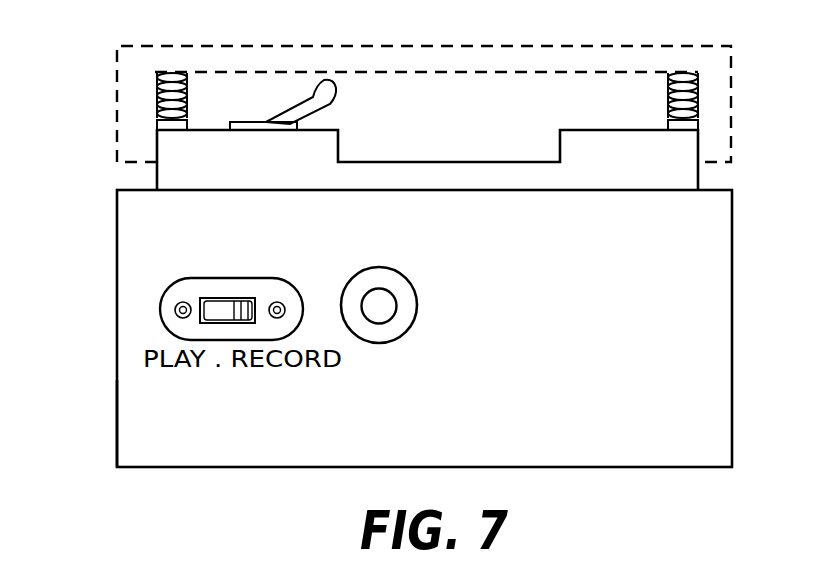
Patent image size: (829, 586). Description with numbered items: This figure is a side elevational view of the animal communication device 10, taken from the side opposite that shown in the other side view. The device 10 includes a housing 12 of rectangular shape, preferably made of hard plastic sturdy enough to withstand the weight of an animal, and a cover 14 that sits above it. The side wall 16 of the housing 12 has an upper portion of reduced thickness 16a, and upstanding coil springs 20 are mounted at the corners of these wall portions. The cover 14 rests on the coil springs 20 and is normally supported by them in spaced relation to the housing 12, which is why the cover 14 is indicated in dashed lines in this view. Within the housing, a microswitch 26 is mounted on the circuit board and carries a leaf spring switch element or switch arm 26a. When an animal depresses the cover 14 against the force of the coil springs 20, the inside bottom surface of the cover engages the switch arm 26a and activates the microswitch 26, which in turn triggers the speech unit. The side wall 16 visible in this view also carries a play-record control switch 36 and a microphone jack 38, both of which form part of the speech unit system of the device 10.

The animal communication device 10 is at (94, 432).
The housing 12 is at (126, 363).
The cover 14 is at (116, 74).
The side wall 16 is at (130, 238).
The upper portion of reduced thickness 16a is at (250, 178).
The coil spring 20 is at (188, 95).
The microswitch 26 is at (261, 131).
The switch arm 26a is at (308, 96).
The play-record control switch 36 is at (230, 289).
The microphone jack 38 is at (406, 300).